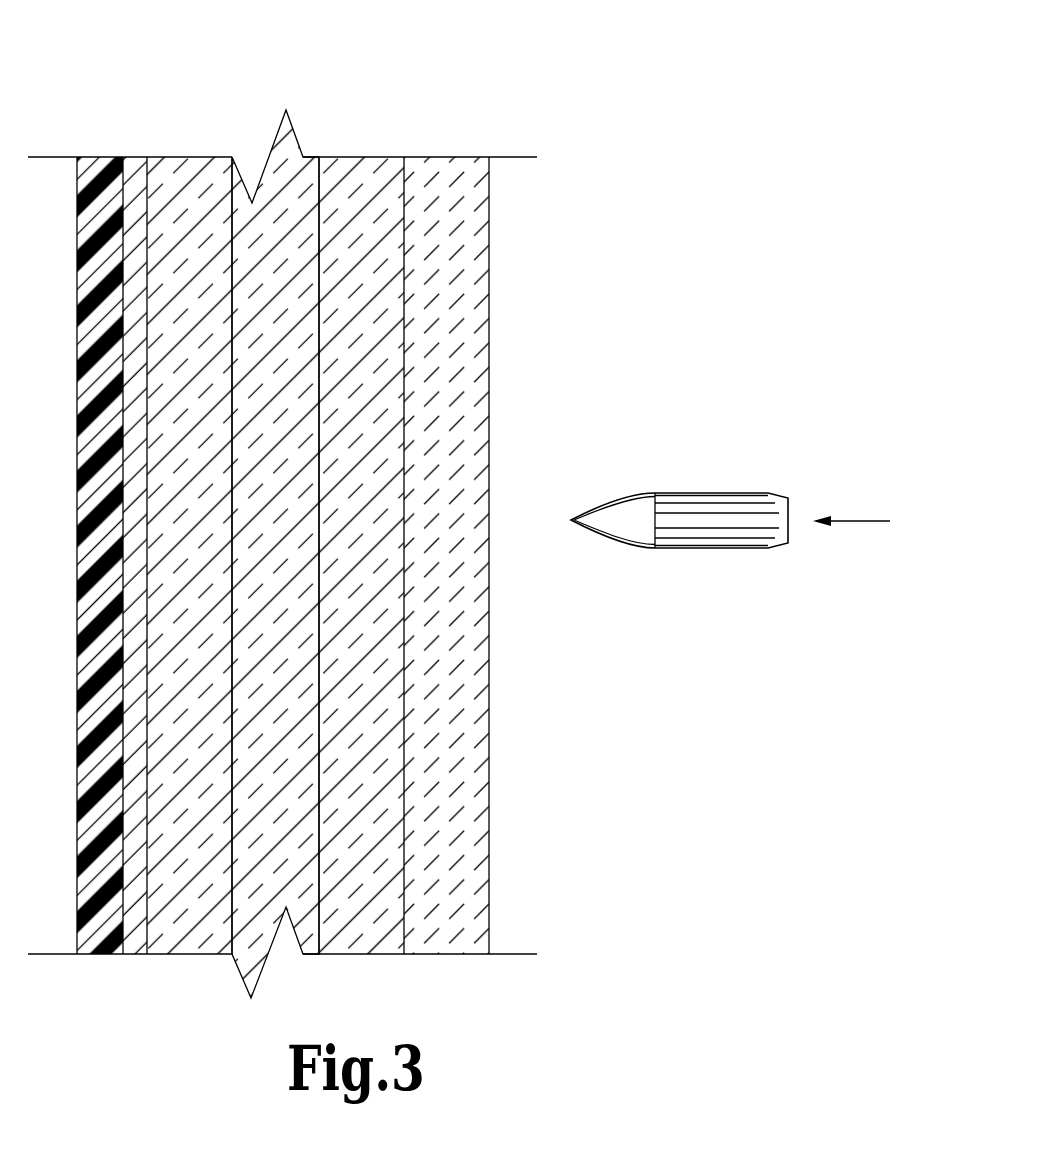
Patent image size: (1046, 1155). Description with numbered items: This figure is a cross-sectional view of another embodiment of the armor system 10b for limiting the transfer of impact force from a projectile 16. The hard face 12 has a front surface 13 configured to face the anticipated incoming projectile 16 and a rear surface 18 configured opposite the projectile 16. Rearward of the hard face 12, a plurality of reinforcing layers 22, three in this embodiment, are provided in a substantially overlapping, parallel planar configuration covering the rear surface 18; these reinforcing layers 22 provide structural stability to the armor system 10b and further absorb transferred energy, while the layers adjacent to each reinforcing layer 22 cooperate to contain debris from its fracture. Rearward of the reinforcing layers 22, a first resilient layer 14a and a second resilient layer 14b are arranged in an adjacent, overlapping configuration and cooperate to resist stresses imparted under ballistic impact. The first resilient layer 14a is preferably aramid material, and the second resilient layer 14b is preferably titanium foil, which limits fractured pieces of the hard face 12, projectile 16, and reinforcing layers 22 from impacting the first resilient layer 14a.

The armor system 10b is at (615, 105).
The hard face 12 is at (463, 157).
The front surface 13 is at (489, 232).
The first resilient layer 14a is at (101, 157).
The second resilient layer 14b is at (131, 157).
The projectile 16 is at (697, 493).
The rear surface 18 is at (402, 157).
The reinforcing layer 22 is at (175, 157).